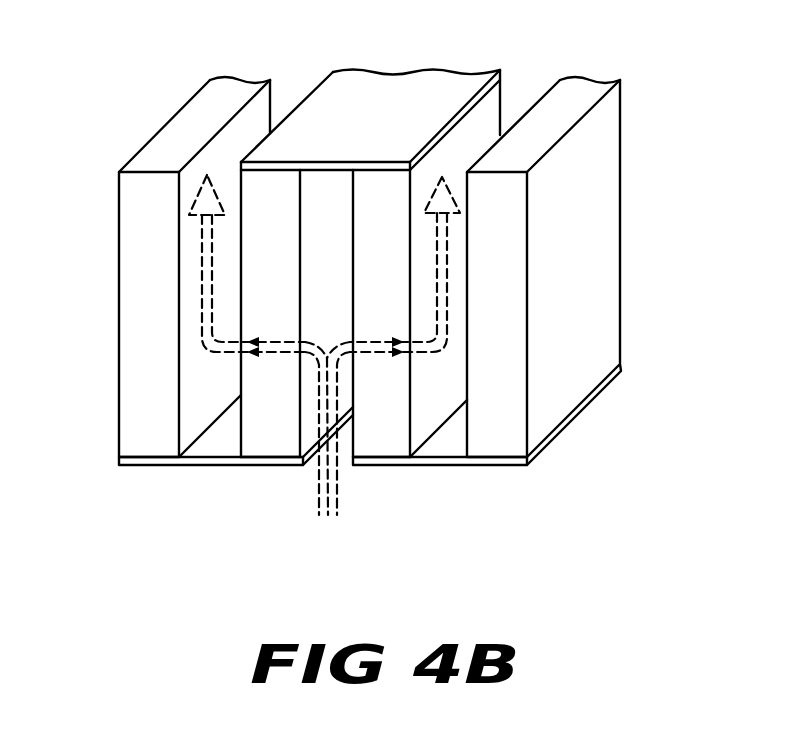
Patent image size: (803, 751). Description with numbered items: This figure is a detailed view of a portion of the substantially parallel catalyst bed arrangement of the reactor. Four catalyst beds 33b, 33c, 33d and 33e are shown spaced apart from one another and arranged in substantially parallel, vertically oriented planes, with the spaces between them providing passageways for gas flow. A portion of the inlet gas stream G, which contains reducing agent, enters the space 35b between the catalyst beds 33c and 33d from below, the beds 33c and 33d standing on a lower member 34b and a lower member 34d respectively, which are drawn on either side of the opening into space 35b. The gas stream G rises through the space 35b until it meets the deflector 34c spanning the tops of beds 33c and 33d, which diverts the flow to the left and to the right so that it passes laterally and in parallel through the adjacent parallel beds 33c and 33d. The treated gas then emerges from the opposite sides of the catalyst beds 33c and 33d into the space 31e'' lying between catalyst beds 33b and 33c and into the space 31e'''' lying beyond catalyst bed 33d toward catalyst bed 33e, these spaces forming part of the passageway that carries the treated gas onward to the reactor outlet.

The space 31e'' is at (316, 85).
The space 31e'''' is at (550, 91).
The catalyst bed 33b is at (165, 262).
The catalyst bed 33c is at (288, 256).
The catalyst bed 33d is at (398, 250).
The catalyst bed 33e is at (515, 248).
The base member 34b is at (212, 467).
The deflector 34c is at (390, 135).
The base member 34d is at (453, 467).
The space 35b is at (345, 484).
The inlet gas stream G is at (324, 356).